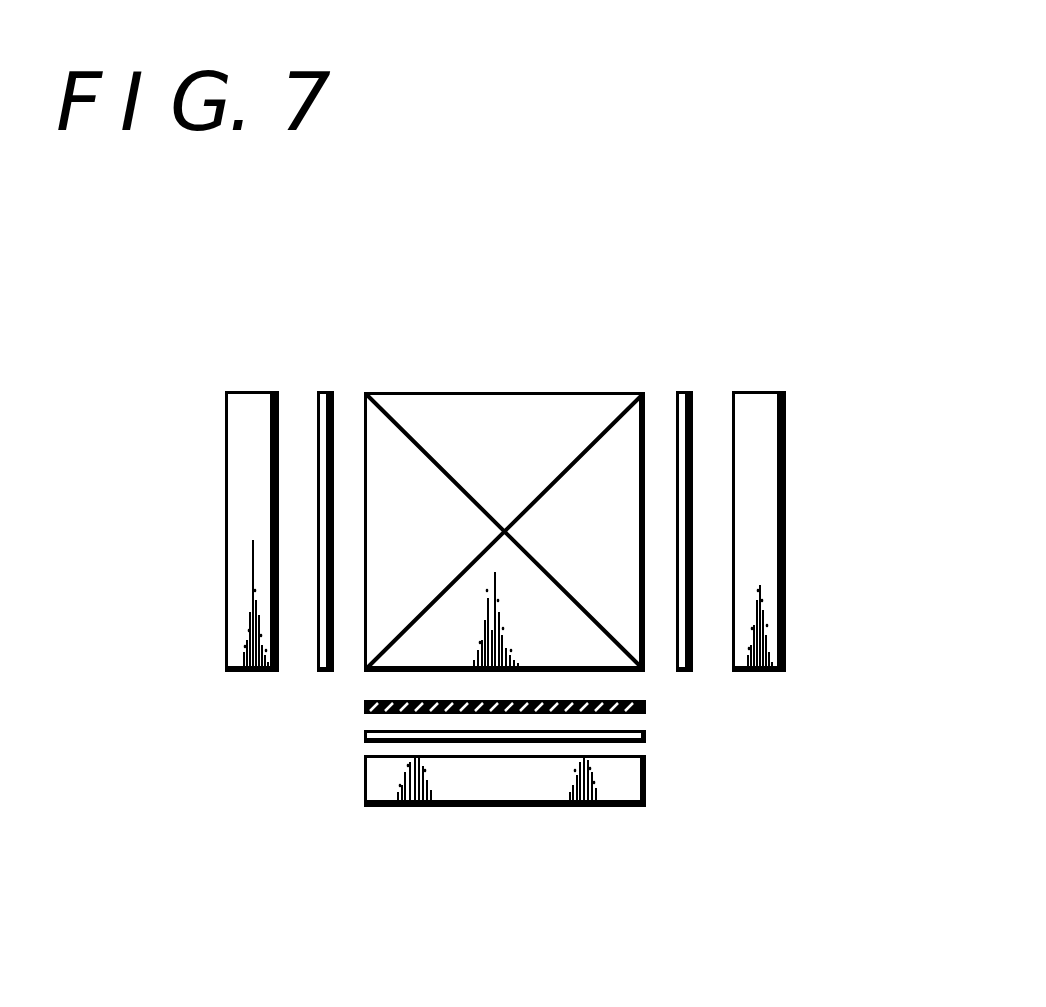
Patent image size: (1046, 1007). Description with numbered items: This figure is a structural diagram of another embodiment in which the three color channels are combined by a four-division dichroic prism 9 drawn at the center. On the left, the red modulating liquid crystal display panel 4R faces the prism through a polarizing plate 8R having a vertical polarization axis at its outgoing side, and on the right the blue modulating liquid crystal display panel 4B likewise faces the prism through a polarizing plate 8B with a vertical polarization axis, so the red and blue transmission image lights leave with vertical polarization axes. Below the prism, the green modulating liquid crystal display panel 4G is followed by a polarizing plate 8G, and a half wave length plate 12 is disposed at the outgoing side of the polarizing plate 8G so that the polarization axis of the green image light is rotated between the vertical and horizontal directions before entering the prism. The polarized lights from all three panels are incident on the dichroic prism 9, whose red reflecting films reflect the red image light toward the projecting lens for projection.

The red modulating liquid crystal display panel 4R is at (226, 530).
The polarizing plate 8R is at (323, 392).
The four-division dichroic prism 9 is at (502, 407).
The polarizing plate 8B is at (690, 392).
The blue modulating liquid crystal display panel 4B is at (786, 532).
The ½ wave length plate 12 is at (646, 705).
The polarizing plate 8G is at (646, 736).
The green modulating liquid crystal display panel 4G is at (573, 807).